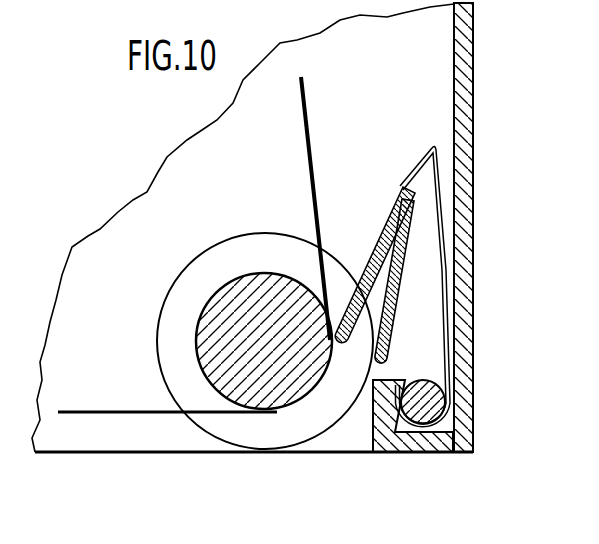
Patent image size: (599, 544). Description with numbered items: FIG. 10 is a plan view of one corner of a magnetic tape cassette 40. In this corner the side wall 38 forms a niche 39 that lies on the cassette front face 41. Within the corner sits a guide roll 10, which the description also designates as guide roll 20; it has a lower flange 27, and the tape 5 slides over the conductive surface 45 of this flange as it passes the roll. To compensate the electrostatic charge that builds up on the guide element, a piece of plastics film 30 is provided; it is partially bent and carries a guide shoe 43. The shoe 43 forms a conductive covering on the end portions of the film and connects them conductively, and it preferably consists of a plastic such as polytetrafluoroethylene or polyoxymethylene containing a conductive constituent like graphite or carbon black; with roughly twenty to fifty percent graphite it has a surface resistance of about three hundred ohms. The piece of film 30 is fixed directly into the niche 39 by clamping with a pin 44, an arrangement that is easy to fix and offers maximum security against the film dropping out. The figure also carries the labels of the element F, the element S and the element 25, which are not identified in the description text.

The tape 5 is at (300, 151).
The tape feed direction F is at (300, 98).
The tape surface S is at (307, 121).
The guide roll 10 is at (220, 335).
The guide roll 20 is at (264, 341).
The blade 25 is at (367, 262).
The lower flange 27 is at (168, 330).
The piece of plastics film 30 is at (418, 172).
The side wall 38 is at (462, 305).
The niche 39 is at (376, 418).
The magnetic tape cassette 40 is at (503, 227).
The cassette front face 41 is at (133, 454).
The guide shoe 43 is at (405, 256).
The pin 44 is at (418, 397).
The conductive surface 45 is at (160, 380).